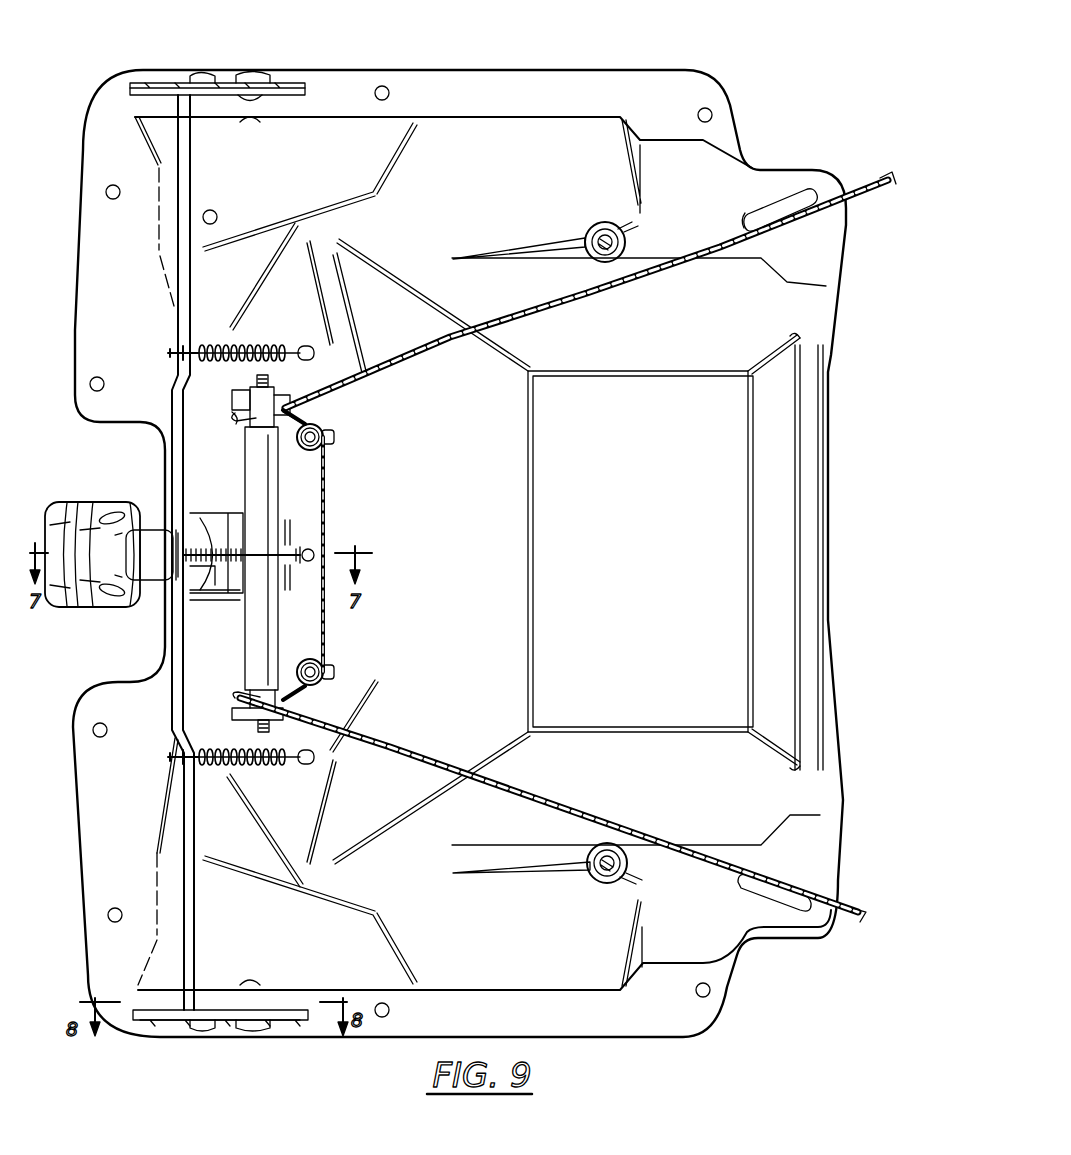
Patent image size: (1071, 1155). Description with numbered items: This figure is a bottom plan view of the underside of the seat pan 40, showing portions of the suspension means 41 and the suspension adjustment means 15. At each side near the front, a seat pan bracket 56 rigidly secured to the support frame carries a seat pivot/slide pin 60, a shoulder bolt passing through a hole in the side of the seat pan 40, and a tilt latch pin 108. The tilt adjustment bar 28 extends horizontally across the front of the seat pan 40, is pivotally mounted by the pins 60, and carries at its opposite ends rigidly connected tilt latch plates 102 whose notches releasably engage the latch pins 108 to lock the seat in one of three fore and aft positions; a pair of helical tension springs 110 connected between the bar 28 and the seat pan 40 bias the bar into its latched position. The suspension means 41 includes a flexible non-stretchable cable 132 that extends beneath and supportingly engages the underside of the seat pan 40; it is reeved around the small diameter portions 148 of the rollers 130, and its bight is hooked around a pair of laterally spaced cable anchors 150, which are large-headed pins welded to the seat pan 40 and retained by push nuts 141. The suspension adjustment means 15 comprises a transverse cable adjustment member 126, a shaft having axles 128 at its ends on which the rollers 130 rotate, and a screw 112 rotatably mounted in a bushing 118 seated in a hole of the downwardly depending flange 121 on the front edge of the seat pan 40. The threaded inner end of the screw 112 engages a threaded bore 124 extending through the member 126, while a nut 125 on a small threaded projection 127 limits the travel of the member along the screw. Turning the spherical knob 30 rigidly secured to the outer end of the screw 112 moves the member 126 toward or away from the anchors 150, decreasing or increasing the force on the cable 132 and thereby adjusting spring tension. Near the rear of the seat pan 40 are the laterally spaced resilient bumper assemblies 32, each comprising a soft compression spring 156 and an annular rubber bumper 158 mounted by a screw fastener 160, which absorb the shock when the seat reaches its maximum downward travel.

The seat pan 40 is at (513, 65).
The tilt latch plate 102 is at (300, 100).
The suspension means 41 is at (402, 371).
The seat pan bracket 56 is at (300, 82).
The seat pivot/slide pin 60 is at (202, 72).
The tilt latch pin 108 is at (252, 70).
The tilt adjustment bar 28 is at (172, 702).
The helical tension spring 110 is at (265, 342).
The cable adjustment member 126 is at (244, 465).
The axle 128 is at (288, 398).
The roller 130 is at (232, 396).
The push nut 141 is at (256, 378).
The small diameter portion 148 is at (240, 423).
The cable anchor 150 is at (335, 435).
The cable 132 is at (530, 305).
The bumper assembly 32 is at (588, 240).
The compression spring 156 is at (600, 228).
The rubber bumper 158 is at (632, 245).
The screw fastener 160 is at (625, 240).
The spherical knob 30 is at (76, 508).
The suspension adjustment means 15 is at (90, 480).
The screw 112 is at (215, 512).
The bushing 118 is at (198, 566).
The flange 121 is at (210, 596).
The threaded projection 127 is at (316, 553).
The threaded bore 124 is at (292, 535).
The nut 125 is at (292, 572).